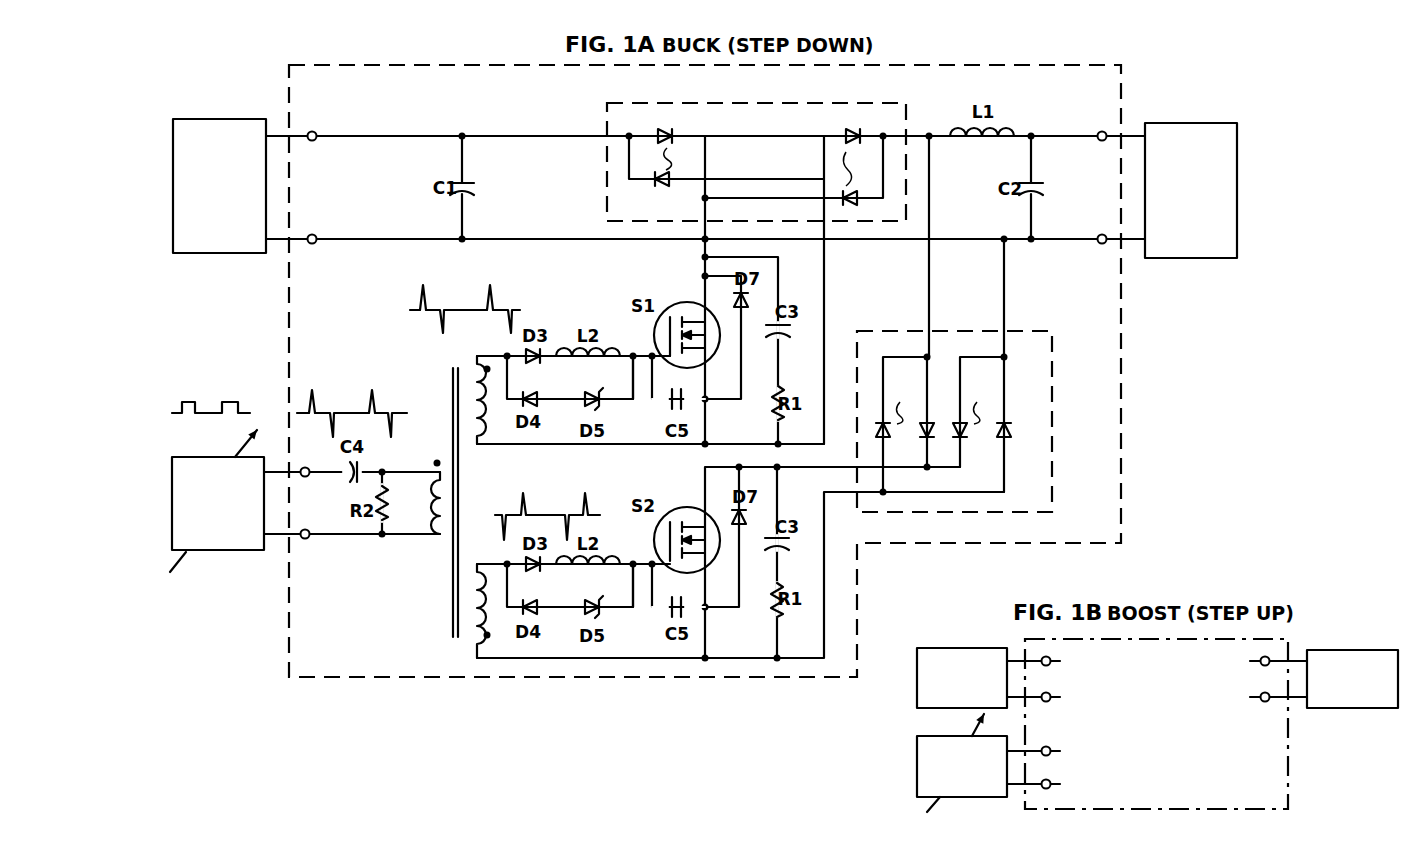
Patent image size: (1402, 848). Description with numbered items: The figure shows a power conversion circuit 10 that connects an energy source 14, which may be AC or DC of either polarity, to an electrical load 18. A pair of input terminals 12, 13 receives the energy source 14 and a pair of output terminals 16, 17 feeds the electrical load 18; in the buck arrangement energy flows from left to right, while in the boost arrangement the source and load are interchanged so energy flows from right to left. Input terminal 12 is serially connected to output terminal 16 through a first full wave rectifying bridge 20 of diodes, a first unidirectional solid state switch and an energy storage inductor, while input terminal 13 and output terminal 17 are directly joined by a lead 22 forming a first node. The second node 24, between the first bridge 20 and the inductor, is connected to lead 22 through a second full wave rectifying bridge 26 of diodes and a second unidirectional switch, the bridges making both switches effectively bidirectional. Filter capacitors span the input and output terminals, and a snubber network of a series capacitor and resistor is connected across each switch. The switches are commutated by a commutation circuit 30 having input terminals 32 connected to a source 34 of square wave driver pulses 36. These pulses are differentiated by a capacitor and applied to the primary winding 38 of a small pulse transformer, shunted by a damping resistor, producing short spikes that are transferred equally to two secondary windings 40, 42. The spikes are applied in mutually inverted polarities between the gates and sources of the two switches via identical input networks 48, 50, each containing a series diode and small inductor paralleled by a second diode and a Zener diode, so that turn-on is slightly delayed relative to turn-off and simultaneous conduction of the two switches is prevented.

In FIG. 1A, the power conversion circuit 10 is at (1123, 440).
In FIG. 1B, the power conversion circuit 10 is at (1140, 735).
In FIG. 1A, the input terminal 12 is at (312, 128).
In FIG. 1B, the input terminal 12 is at (1060, 661).
In FIG. 1A, the input terminal 13 is at (312, 247).
In FIG. 1B, the input terminal 13 is at (1060, 697).
In FIG. 1A, the energy source 14 is at (216, 256).
In FIG. 1B, the energy source 14 is at (1352, 711).
In FIG. 1A, the output terminal 16 is at (1102, 128).
In FIG. 1B, the output terminal 16 is at (1260, 665).
In FIG. 1A, the output terminal 17 is at (1102, 247).
In FIG. 1B, the output terminal 17 is at (1260, 701).
In FIG. 1A, the electrical load 18 is at (1193, 261).
In FIG. 1B, the electrical load 18 is at (917, 695).
In FIG. 1A, the full wave rectifying bridge 20 is at (604, 110).
In FIG. 1A, the lead 22 is at (543, 234).
In FIG. 1A, the second node 24 is at (929, 128).
In FIG. 1A, the full wave rectifying bridge 26 is at (1052, 412).
In FIG. 1A, the commutation circuit 30 is at (445, 598).
In FIG. 1A, the input terminals 32 is at (305, 479).
In FIG. 1B, the input terminals 32 is at (1060, 753).
In FIG. 1A, the source of square wave driver pulses 34 is at (218, 553).
In FIG. 1B, the source of square wave driver pulses 34 is at (917, 766).
In FIG. 1A, the square wave driver pulses 36 is at (211, 405).
In FIG. 1A, the primary winding 38 is at (432, 538).
In FIG. 1A, the secondary winding 40 is at (475, 447).
In FIG. 1A, the secondary winding 42 is at (476, 564).
In FIG. 1A, the input network 48 is at (638, 403).
In FIG. 1A, the input network 50 is at (636, 612).